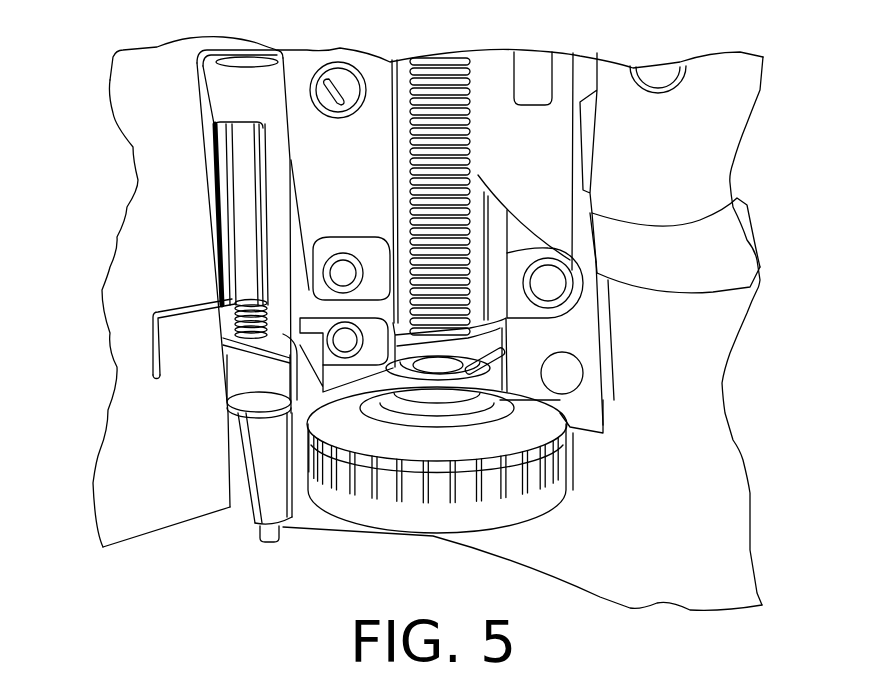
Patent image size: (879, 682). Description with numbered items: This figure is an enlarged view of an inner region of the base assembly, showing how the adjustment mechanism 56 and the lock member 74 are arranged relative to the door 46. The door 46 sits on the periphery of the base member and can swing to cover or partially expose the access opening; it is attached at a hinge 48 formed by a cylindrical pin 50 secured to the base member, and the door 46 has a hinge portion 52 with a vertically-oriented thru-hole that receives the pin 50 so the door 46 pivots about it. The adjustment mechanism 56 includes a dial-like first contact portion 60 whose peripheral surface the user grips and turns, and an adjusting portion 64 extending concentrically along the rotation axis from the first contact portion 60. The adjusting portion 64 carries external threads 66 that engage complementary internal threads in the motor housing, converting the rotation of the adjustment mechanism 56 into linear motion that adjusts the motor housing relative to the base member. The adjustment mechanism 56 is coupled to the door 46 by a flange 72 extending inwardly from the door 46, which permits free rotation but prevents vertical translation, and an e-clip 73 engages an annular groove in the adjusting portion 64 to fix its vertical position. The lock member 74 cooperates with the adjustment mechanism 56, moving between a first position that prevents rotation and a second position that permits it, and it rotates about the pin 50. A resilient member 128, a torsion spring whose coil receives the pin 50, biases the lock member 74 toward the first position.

The door 46 is at (297, 72).
The hinge 48 is at (232, 168).
The cylindrical pin 50 is at (240, 223).
The hinge portion 52 is at (233, 88).
The adjustment mechanism 56 is at (572, 514).
The first contact portion 60 is at (330, 514).
The adjusting portion 64 is at (506, 136).
The external threads 66 is at (472, 73).
The flange 72 is at (495, 337).
The e-clip 73 is at (472, 365).
The lock member 74 is at (308, 432).
The resilient member 128 is at (188, 297).